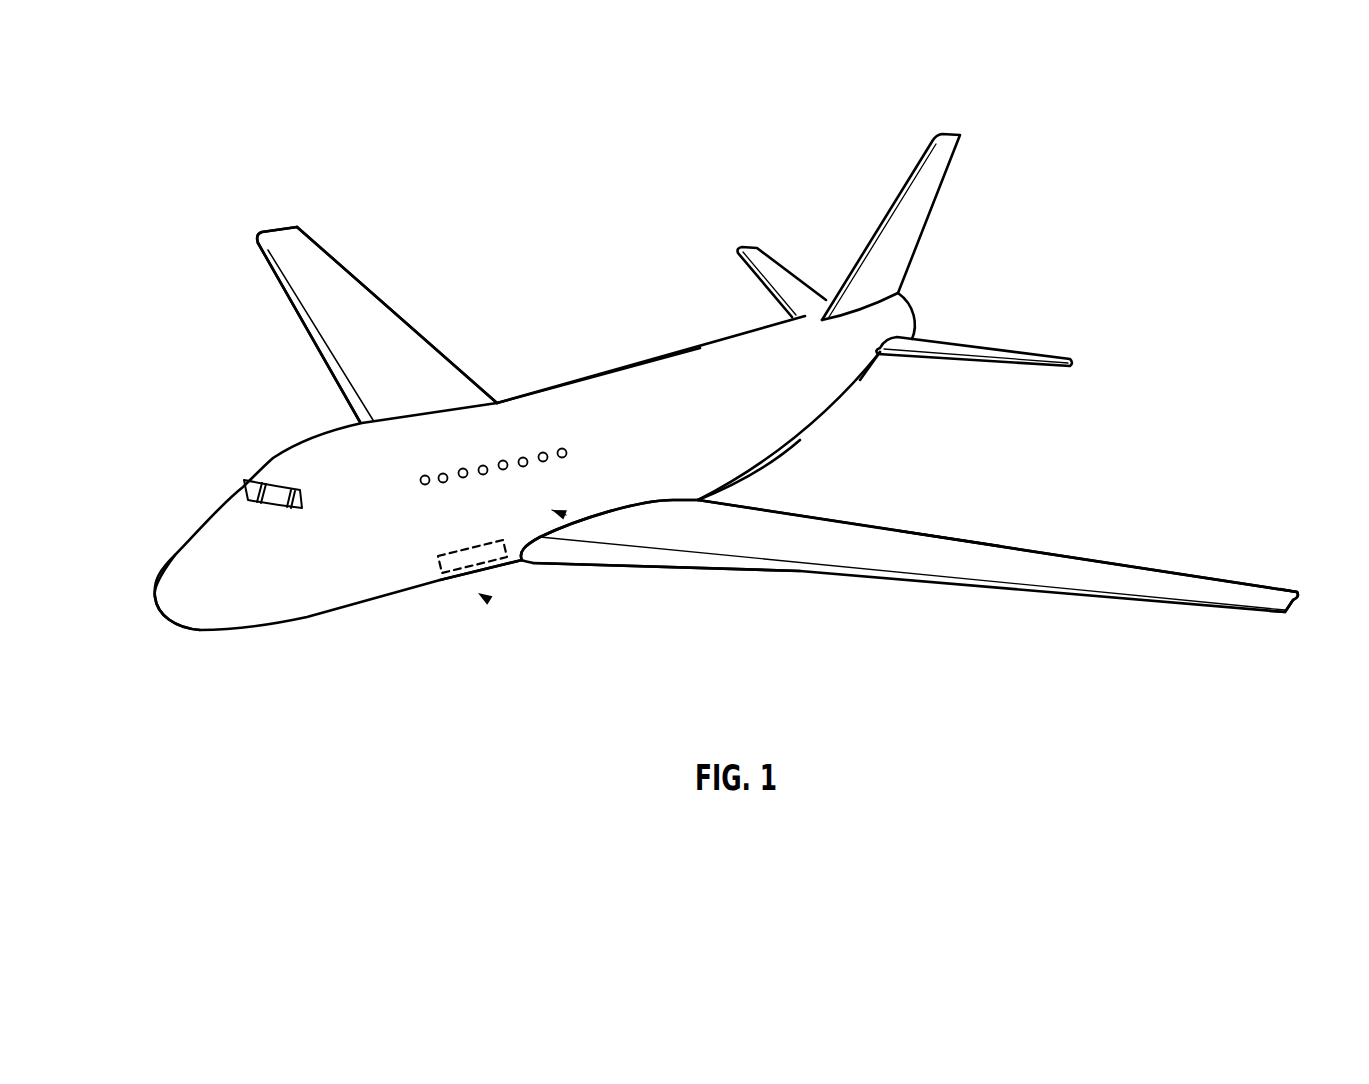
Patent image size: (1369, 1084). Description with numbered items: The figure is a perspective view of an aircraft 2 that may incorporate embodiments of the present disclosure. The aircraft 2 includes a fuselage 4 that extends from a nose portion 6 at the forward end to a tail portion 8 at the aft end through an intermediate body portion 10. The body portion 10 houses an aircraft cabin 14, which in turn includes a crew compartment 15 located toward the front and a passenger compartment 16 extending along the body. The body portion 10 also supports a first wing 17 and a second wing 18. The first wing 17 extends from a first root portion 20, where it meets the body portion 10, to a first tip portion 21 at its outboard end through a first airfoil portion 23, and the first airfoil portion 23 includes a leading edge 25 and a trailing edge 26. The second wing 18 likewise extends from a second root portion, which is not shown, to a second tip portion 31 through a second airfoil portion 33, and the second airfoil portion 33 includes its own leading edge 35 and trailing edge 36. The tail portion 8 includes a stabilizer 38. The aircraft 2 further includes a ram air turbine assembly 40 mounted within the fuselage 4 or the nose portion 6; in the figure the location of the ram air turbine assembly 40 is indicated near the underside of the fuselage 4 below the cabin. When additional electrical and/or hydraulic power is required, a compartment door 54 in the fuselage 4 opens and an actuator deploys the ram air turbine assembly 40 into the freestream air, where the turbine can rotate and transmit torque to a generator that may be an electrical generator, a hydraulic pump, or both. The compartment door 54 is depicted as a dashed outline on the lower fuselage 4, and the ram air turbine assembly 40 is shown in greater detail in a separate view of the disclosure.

The aircraft 2 is at (160, 460).
The fuselage 4 is at (310, 602).
The nose portion 6 is at (167, 600).
The tail portion 8 is at (853, 378).
The body portion 10 is at (753, 455).
The aircraft cabin 14 is at (566, 515).
The crew compartment 15 is at (253, 485).
The passenger compartment 16 is at (563, 400).
The first wing 17 is at (935, 590).
The second wing 18 is at (290, 243).
The first root portion 20 is at (650, 502).
The first tip portion 21 is at (1295, 598).
The first airfoil portion 23 is at (848, 540).
The leading edge 25 is at (723, 562).
The trailing edge 26 is at (958, 538).
The second tip portion 31 is at (277, 227).
The second airfoil portion 33 is at (333, 283).
The leading edge 35 is at (267, 260).
The trailing edge 36 is at (368, 287).
The stabilizer 38 is at (952, 332).
The ram air turbine (RAT) assembly 40 is at (478, 593).
The compartment door 54 is at (495, 565).